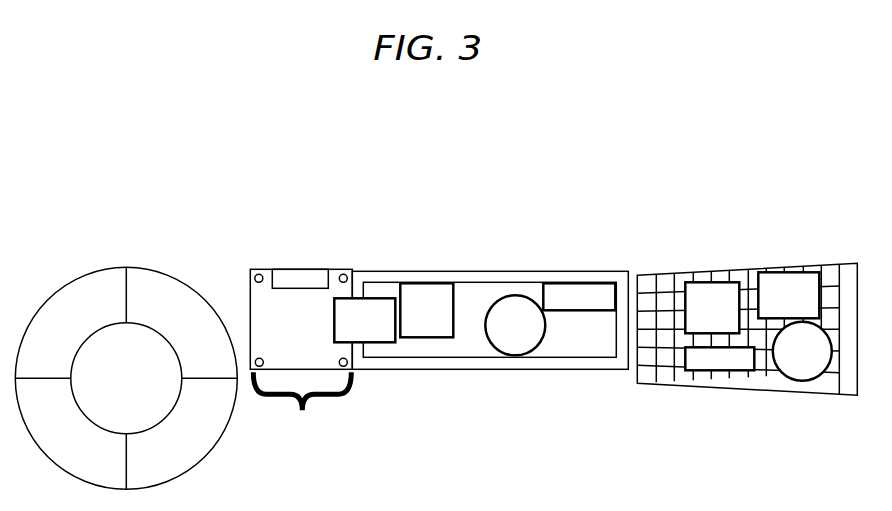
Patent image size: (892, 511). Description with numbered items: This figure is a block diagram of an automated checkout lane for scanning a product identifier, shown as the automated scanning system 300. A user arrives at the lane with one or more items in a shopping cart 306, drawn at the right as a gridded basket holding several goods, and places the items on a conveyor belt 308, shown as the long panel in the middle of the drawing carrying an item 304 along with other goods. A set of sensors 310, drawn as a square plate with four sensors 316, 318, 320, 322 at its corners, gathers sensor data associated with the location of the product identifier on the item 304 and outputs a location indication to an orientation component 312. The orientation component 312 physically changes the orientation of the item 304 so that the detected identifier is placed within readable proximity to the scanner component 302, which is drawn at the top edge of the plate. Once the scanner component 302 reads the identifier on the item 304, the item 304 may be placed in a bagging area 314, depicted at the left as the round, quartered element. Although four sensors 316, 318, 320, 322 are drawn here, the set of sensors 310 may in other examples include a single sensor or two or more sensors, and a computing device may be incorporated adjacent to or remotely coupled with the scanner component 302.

The automated scanning system 300 is at (162, 124).
The scanner component 302 is at (300, 269).
The item 304 is at (363, 320).
The shopping cart 306 is at (730, 268).
The conveyor belt 308 is at (475, 302).
The set of sensors 310 is at (302, 407).
The orientation component 312 is at (280, 346).
The bagging area 314 is at (106, 389).
The sensor 316 is at (252, 268).
The sensor 318 is at (344, 268).
The sensor 320 is at (253, 373).
The sensor 322 is at (349, 373).